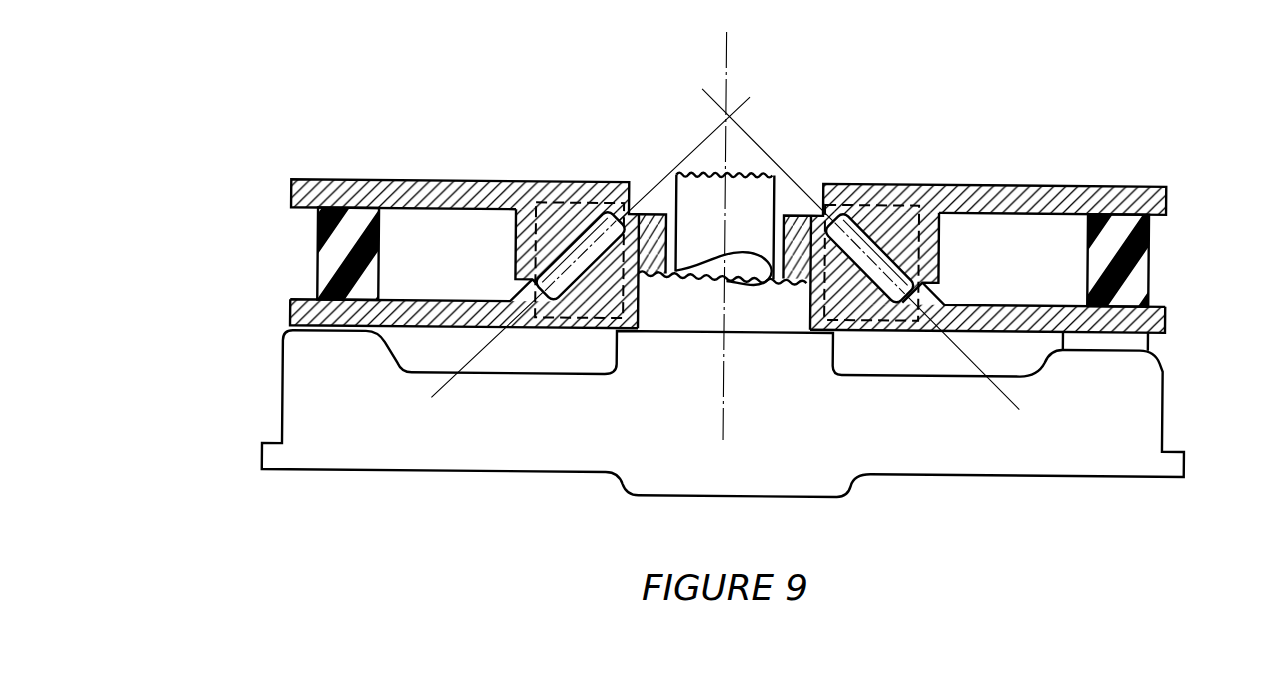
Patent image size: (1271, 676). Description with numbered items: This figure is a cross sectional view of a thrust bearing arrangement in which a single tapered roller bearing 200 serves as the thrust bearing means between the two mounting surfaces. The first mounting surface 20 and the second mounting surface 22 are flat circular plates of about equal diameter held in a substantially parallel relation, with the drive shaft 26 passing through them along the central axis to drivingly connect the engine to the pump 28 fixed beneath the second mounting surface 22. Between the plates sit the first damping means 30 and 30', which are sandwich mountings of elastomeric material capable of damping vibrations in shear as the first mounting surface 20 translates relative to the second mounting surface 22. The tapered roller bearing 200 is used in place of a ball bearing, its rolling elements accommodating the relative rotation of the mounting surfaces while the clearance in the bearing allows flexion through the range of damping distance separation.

The first mounting surface 20 is at (1120, 183).
The second mounting surface 22 is at (287, 305).
The drive shaft 26 is at (754, 193).
The pump 28 is at (281, 446).
The first damping means 30 is at (325, 251).
The first damping means 30' is at (1097, 258).
The tapered roller bearing 200 is at (571, 241).